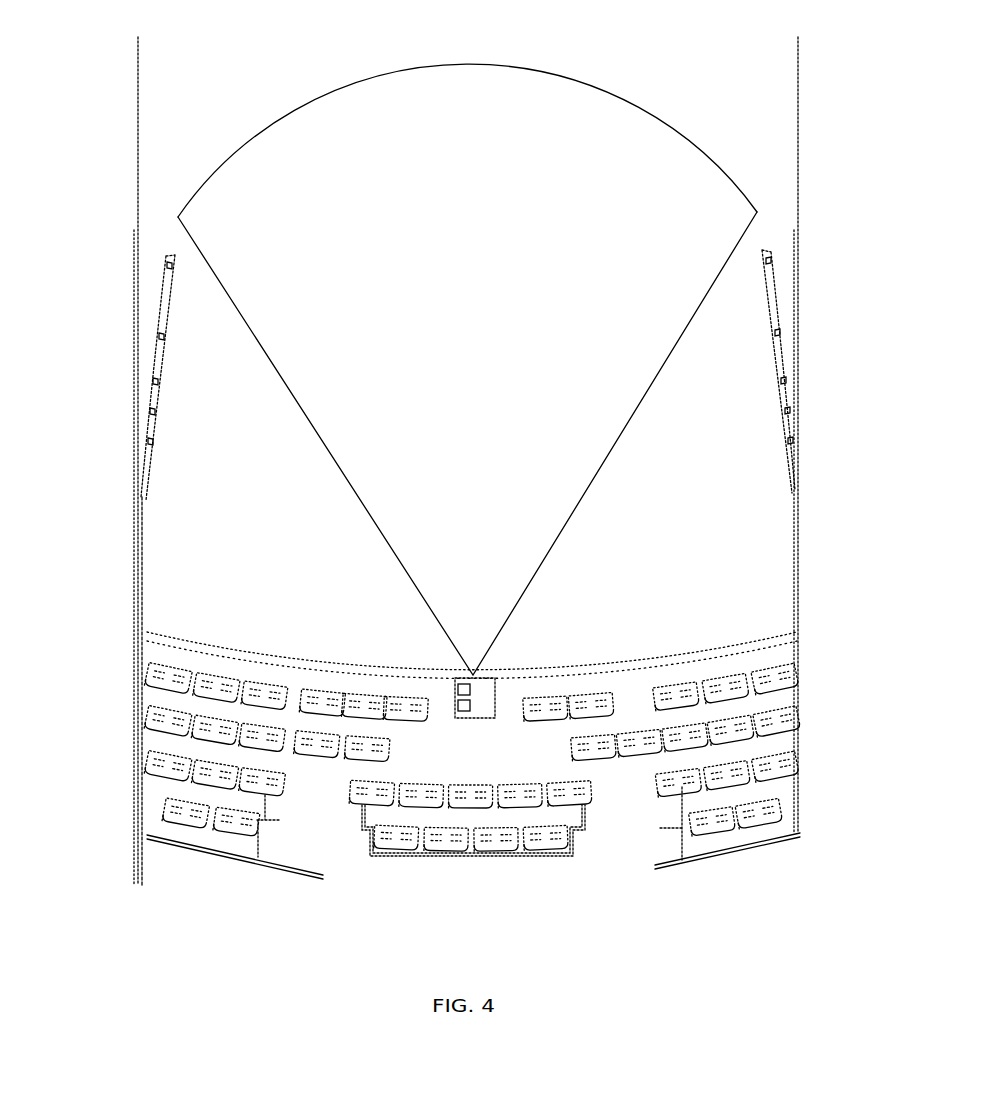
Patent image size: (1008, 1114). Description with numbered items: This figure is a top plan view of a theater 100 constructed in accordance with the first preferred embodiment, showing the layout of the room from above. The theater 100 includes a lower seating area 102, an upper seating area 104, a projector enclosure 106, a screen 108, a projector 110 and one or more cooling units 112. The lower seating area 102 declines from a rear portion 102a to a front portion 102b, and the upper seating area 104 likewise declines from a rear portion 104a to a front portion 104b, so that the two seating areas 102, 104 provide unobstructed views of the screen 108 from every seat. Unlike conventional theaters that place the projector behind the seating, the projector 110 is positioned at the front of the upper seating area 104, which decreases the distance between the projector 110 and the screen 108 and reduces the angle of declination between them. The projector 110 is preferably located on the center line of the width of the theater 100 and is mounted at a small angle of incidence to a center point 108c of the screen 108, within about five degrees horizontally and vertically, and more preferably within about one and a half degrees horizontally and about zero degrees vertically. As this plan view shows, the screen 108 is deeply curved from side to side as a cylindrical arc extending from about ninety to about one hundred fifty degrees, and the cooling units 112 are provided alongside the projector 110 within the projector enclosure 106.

The theater 100 is at (88, 220).
The lower seating area 102 is at (182, 412).
The rear portion of lower seating area 102a is at (707, 597).
The front portion of lower seating area 102b is at (740, 272).
The upper seating area 104 is at (469, 747).
The rear portion of upper seating area 104a is at (720, 833).
The front portion of upper seating area 104b is at (727, 667).
The projector enclosure 106 is at (467, 675).
The screen 108 is at (467, 341).
The center point of screen 108c is at (473, 67).
The projector 110 is at (487, 708).
The cooling unit 112 is at (455, 688).